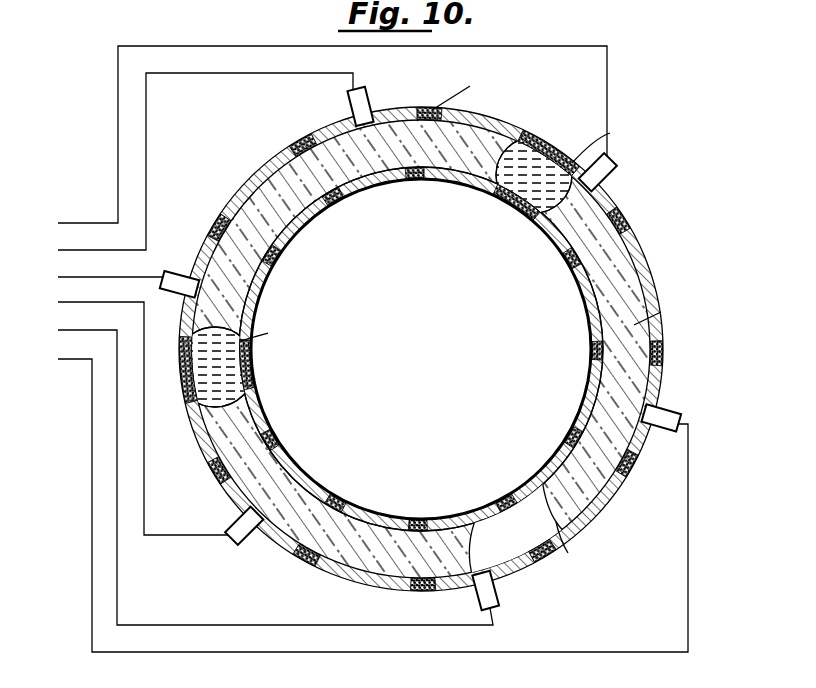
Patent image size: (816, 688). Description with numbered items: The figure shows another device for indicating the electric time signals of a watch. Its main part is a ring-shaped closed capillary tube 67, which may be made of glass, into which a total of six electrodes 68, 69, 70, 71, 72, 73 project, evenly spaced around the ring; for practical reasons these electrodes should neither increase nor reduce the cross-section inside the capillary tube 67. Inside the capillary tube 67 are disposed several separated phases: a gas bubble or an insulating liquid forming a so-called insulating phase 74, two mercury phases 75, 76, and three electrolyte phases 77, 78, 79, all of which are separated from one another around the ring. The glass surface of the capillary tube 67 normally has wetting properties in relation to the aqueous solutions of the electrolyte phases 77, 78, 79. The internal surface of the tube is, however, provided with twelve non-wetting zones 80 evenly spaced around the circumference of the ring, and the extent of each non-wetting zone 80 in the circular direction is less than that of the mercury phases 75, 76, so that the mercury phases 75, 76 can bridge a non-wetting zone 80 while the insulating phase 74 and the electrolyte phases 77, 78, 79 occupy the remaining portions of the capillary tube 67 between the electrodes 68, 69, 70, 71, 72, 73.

The ring-shaped closed capillary tube 67 is at (664, 269).
The electrode 68 is at (608, 176).
The electrode 69 is at (670, 413).
The electrode 70 is at (497, 596).
The electrode 71 is at (239, 542).
The electrode 72 is at (178, 273).
The electrode 73 is at (368, 100).
The insulating phase 74 is at (528, 503).
The mercury phase 75 is at (240, 366).
The mercury phase 76 is at (513, 205).
The electrolyte phase 77 is at (362, 527).
The electrolyte phase 78 is at (292, 203).
The electrolyte phase 79 is at (617, 317).
The non-wetting zone 80 is at (424, 110).